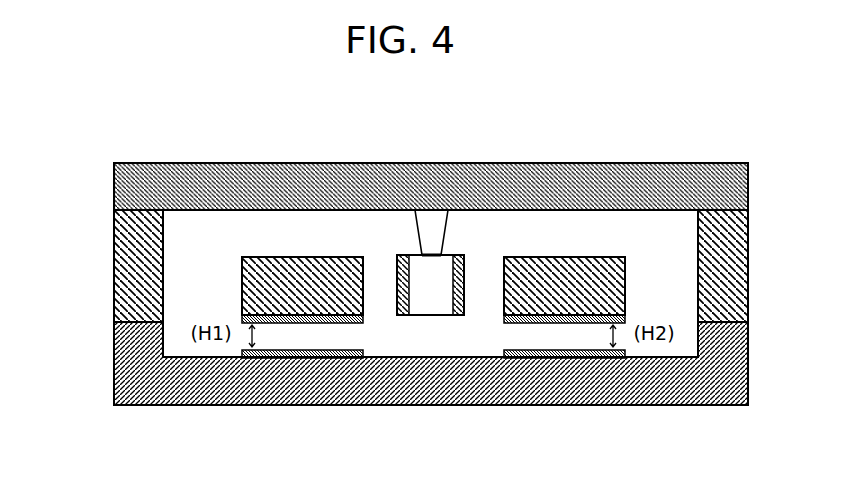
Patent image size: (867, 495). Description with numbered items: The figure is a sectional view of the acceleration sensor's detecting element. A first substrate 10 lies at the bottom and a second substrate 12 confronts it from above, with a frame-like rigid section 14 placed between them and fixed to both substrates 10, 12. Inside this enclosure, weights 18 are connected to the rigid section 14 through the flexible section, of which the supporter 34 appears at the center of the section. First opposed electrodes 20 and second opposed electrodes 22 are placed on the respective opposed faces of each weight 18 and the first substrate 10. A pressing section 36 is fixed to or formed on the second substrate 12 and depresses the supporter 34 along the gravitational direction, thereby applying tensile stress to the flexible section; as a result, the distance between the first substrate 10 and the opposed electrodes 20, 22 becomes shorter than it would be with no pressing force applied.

The first substrate 10 is at (130, 367).
The second substrate 12 is at (137, 186).
The rigid section 14 is at (138, 281).
The weight 18 is at (275, 268).
The first opposed electrodes 20 is at (306, 351).
The second opposed electrodes 22 is at (545, 355).
The supporter 34 is at (433, 303).
The pressing section 36 is at (429, 230).